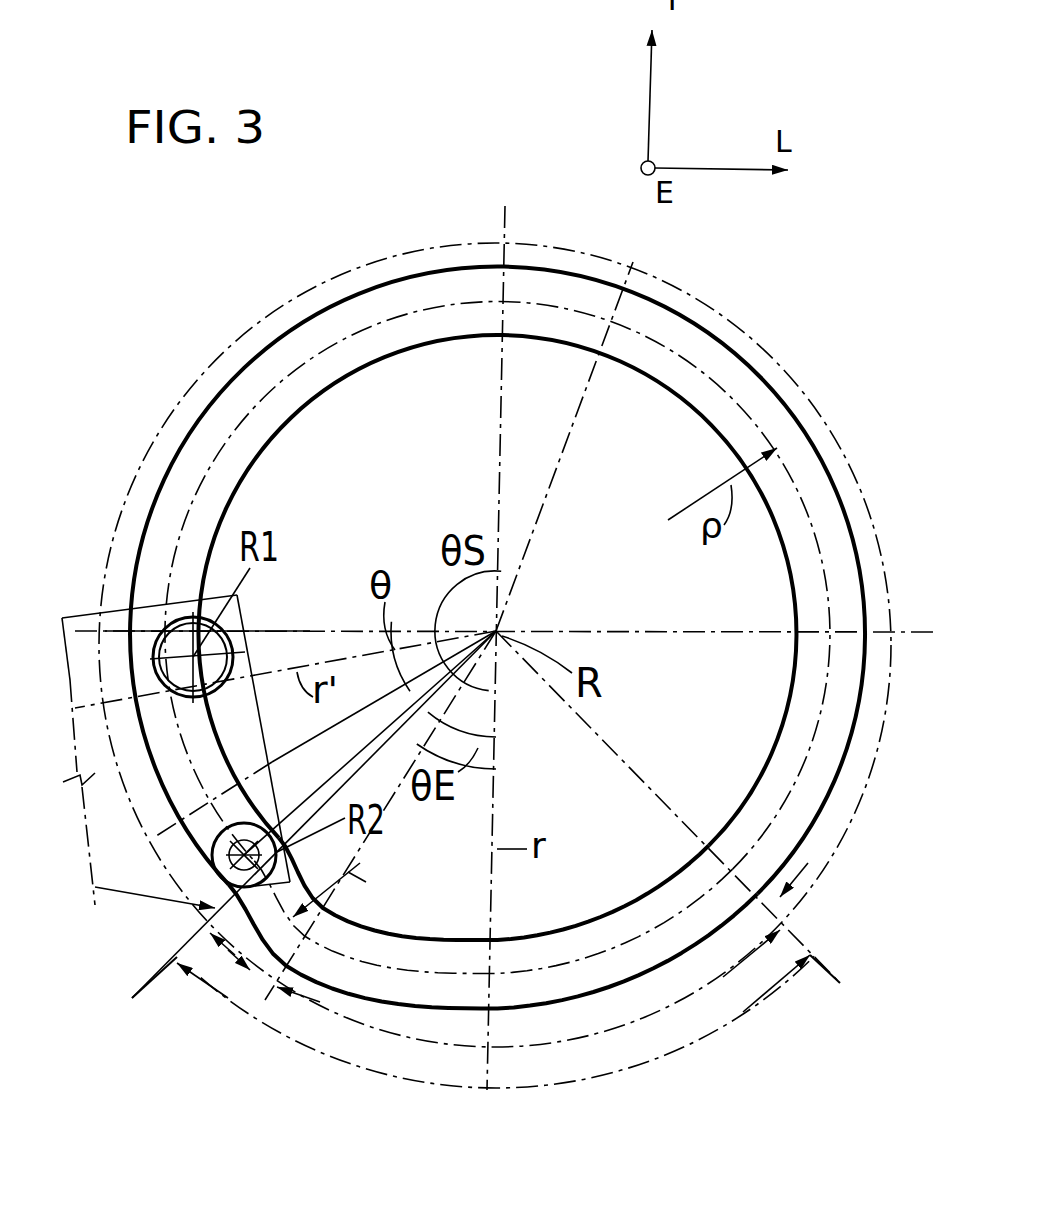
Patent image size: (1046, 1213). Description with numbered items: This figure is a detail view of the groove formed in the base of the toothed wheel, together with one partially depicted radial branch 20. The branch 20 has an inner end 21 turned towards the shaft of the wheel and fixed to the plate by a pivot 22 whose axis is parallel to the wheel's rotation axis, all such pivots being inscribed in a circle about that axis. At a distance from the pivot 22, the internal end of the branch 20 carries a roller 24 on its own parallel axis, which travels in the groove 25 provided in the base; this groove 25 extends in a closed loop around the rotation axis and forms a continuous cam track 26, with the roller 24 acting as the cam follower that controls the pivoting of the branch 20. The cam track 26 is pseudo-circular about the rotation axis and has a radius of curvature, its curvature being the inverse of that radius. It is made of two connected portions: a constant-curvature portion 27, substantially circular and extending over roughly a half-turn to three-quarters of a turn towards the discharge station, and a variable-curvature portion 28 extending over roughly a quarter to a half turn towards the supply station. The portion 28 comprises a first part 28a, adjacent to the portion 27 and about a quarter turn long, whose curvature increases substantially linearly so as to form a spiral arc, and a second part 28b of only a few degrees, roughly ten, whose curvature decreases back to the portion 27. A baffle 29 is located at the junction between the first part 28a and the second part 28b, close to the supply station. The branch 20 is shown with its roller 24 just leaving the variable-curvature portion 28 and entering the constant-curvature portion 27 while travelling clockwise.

The radial branch 20 is at (80, 618).
The inner end of the branch 21 is at (257, 697).
The pivot 22 is at (168, 622).
The roller 24 is at (266, 832).
The groove 25 is at (310, 342).
The cam track 26 is at (250, 413).
The constant-curvature portion 27 is at (421, 250).
The variable-curvature portion 28 is at (410, 1082).
The first part of the variable-curvature portion 28a is at (713, 982).
The second part of the variable-curvature portion 28b is at (212, 975).
The baffle 29 is at (293, 942).